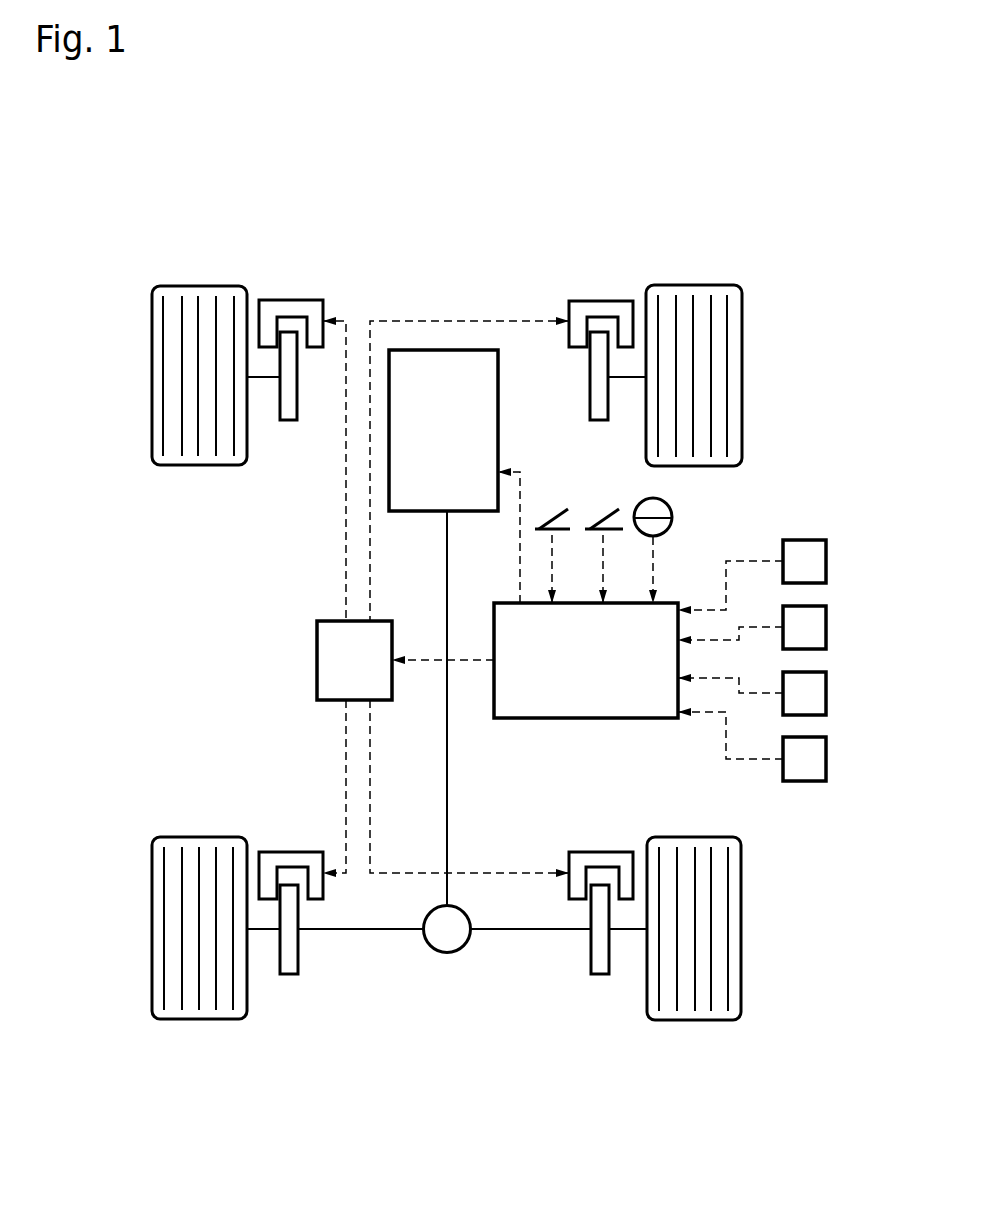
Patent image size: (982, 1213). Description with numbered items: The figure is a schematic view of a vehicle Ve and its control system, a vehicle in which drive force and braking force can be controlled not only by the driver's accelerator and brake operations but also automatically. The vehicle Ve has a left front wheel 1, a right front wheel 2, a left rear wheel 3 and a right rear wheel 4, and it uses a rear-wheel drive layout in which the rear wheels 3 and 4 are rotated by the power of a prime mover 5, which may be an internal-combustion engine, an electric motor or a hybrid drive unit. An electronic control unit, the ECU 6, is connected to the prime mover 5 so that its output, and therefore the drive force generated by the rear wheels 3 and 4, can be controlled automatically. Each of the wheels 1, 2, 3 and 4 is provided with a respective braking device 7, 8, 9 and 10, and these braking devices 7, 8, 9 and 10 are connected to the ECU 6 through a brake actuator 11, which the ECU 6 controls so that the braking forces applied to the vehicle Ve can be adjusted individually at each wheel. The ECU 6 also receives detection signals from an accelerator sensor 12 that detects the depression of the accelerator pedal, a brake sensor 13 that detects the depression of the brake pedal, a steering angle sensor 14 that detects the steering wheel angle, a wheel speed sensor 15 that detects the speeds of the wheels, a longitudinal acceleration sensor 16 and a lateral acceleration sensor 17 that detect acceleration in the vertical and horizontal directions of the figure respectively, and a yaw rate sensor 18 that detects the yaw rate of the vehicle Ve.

The left front wheel 1 is at (158, 431).
The right front wheel 2 is at (742, 414).
The left rear wheel 3 is at (158, 979).
The right rear wheel 4 is at (741, 975).
The prime mover 5 is at (486, 398).
The electronic control unit (ECU) 6 is at (563, 712).
The braking device 7 is at (309, 372).
The braking device 8 is at (583, 376).
The braking device 9 is at (276, 840).
The braking device 10 is at (617, 840).
The brake actuator 11 is at (327, 650).
The accelerator sensor 12 is at (600, 519).
The brake sensor 13 is at (548, 519).
The steering angle sensor 14 is at (672, 510).
The wheel speed sensor 15 is at (818, 555).
The longitudinal acceleration sensor 16 is at (818, 621).
The lateral acceleration sensor 17 is at (818, 687).
The yaw rate sensor 18 is at (818, 757).
The vehicle Ve is at (729, 214).